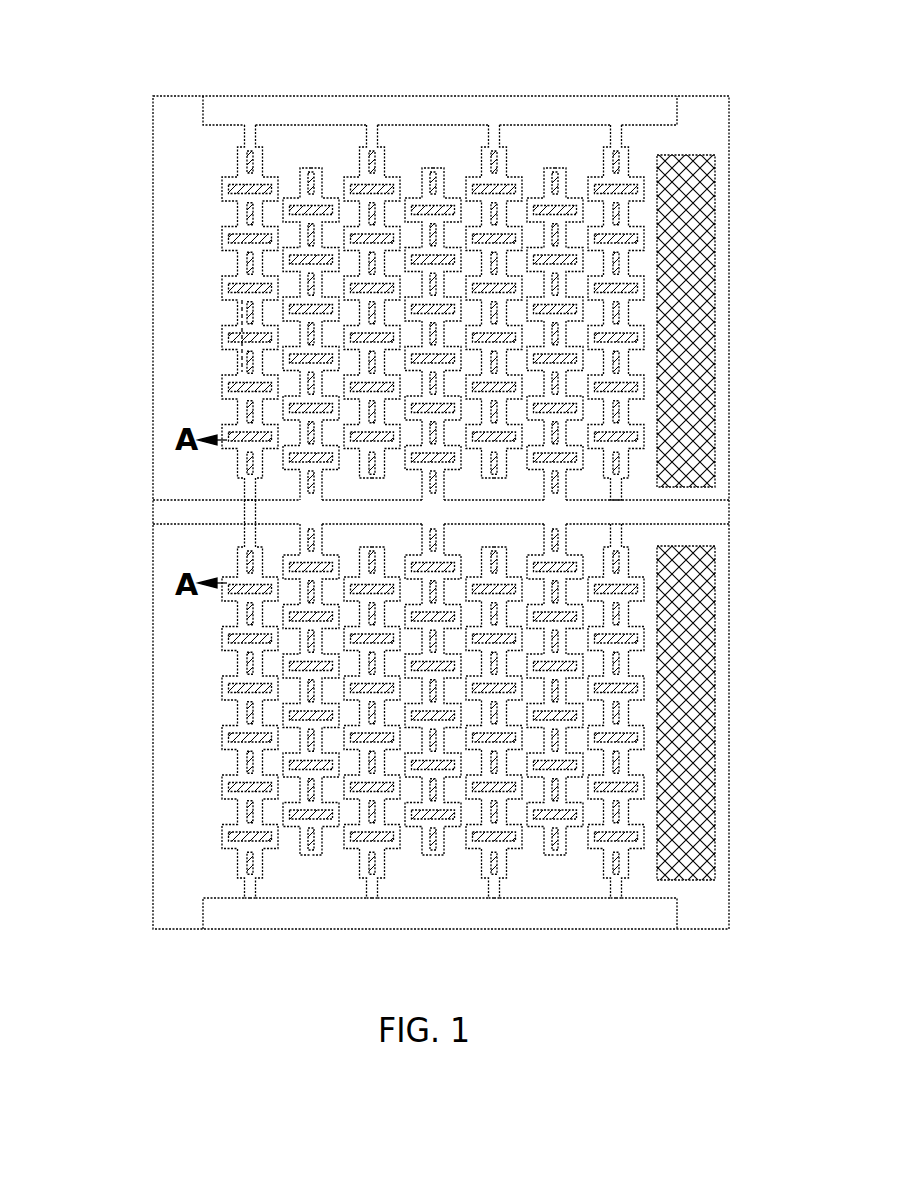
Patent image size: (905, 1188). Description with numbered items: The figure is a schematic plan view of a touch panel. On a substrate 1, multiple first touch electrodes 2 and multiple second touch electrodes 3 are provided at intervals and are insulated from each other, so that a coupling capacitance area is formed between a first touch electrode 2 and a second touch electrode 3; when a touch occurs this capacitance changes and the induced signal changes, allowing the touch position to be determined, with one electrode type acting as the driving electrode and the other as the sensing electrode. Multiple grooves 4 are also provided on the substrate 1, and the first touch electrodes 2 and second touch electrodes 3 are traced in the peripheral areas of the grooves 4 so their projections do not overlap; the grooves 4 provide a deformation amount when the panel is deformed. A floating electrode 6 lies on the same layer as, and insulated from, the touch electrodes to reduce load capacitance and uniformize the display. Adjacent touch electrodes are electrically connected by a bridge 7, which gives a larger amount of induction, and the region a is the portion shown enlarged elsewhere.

The substrate 1 is at (153, 143).
The first touch electrode 2 is at (312, 168).
The second touch electrode 3 is at (222, 238).
The groove 4 is at (222, 383).
The enlarged region a is at (240, 322).
The floating electrode 6 is at (715, 277).
The bridge 7 is at (245, 532).